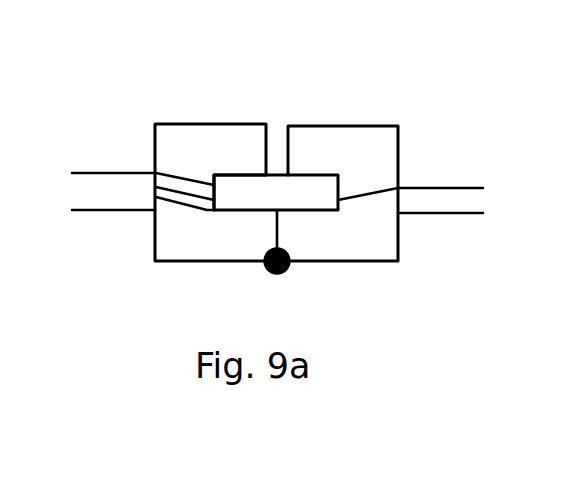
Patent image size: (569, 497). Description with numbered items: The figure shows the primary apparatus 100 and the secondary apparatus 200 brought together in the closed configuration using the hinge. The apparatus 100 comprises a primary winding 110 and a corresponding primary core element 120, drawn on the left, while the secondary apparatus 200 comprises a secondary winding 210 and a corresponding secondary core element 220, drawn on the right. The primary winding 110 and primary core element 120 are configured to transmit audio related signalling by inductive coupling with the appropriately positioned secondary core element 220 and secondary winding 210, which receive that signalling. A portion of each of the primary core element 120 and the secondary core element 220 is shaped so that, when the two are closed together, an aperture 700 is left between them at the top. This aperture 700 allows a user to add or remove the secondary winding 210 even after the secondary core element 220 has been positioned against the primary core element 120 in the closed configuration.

The apparatus 100 is at (120, 105).
The primary winding 110 is at (178, 177).
The primary core element 120 is at (168, 235).
The secondary apparatus 200 is at (443, 138).
The secondary winding 210 is at (360, 202).
The secondary core element 220 is at (350, 250).
The aperture 700 is at (283, 127).